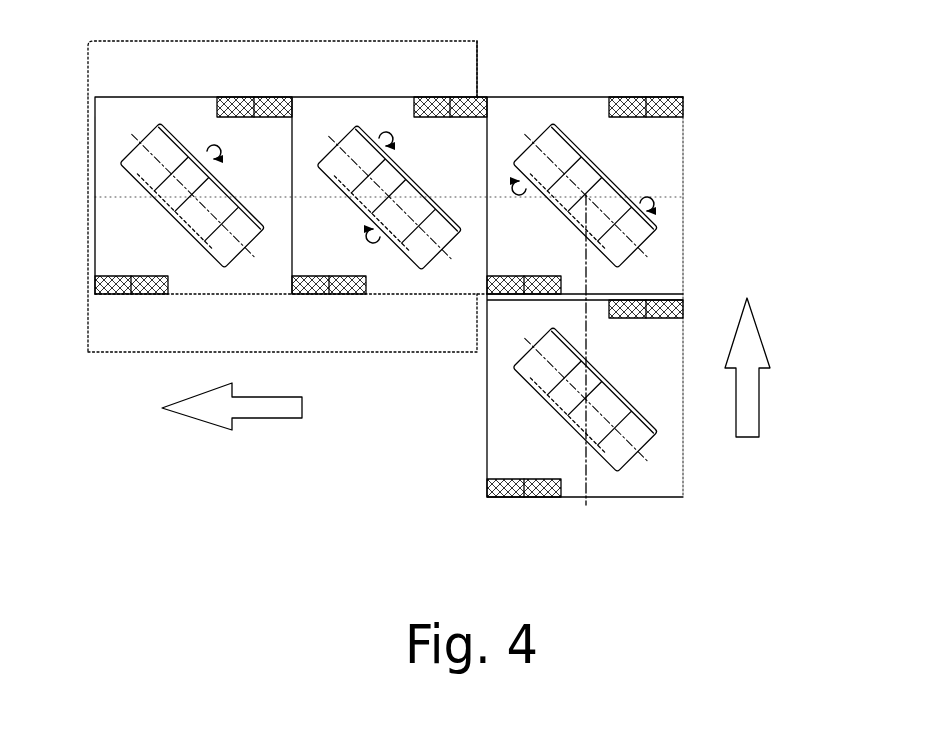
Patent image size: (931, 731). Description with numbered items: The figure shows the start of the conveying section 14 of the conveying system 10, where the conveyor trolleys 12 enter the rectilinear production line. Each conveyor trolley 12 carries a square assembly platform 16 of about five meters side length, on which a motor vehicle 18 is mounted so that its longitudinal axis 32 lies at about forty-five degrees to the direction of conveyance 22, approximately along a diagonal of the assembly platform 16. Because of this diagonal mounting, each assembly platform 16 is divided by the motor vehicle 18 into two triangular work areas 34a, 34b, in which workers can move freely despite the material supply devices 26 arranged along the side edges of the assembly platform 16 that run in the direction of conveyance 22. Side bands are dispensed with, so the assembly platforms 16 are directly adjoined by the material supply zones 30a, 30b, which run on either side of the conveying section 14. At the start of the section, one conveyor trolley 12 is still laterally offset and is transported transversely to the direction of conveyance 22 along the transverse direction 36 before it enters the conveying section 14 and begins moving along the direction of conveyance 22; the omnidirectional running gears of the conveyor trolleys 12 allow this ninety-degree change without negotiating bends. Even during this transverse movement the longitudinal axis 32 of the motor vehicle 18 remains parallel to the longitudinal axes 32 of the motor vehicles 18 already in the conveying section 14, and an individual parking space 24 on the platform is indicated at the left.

The conveying system 10 is at (130, 460).
The conveyor trolleys 12 is at (88, 117).
The conveying section 14 is at (370, 382).
The assembly platforms 16 is at (112, 266).
The motor vehicles 18 is at (140, 146).
The direction of conveyance 22 is at (258, 412).
The parking space 24 is at (115, 200).
The material supply devices 26 is at (100, 282).
The material supply zone 30a is at (474, 60).
The material supply zone 30b is at (110, 352).
The longitudinal axes 32 is at (133, 142).
The triangular work area 34a is at (238, 143).
The triangular work area 34b is at (150, 236).
The transverse direction 36 is at (745, 405).